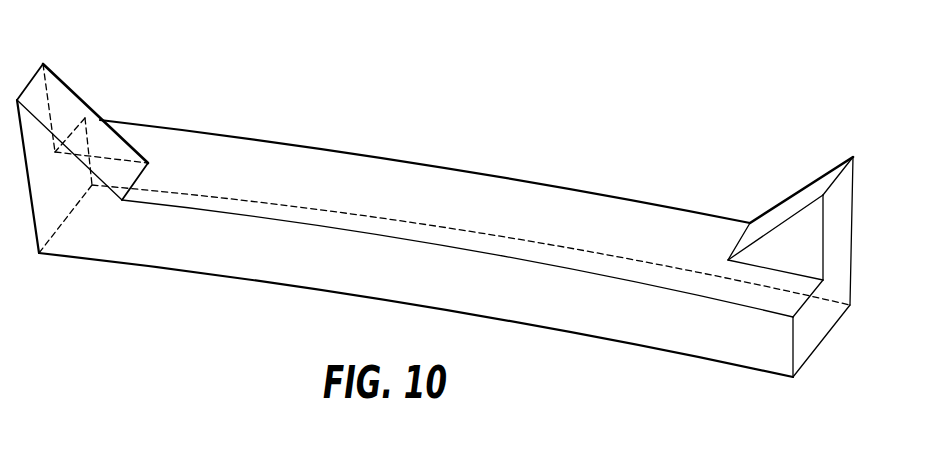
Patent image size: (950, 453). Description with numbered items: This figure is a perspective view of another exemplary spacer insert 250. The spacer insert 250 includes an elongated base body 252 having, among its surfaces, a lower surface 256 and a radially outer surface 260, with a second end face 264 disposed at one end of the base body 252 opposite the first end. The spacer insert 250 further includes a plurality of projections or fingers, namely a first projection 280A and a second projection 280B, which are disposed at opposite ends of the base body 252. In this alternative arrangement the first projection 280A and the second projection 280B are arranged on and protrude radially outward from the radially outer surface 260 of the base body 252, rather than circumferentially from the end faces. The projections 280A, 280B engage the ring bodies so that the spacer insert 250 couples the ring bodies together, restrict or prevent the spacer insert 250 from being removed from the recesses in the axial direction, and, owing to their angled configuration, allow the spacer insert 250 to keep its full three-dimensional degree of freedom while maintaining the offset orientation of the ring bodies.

The spacer insert 250 is at (463, 214).
The base body 252 is at (385, 153).
The lower surface 256 is at (737, 352).
The radially outer surface 260 is at (226, 152).
The second end face 264 is at (810, 333).
The first projection 280A is at (60, 72).
The second projection 280B is at (828, 172).